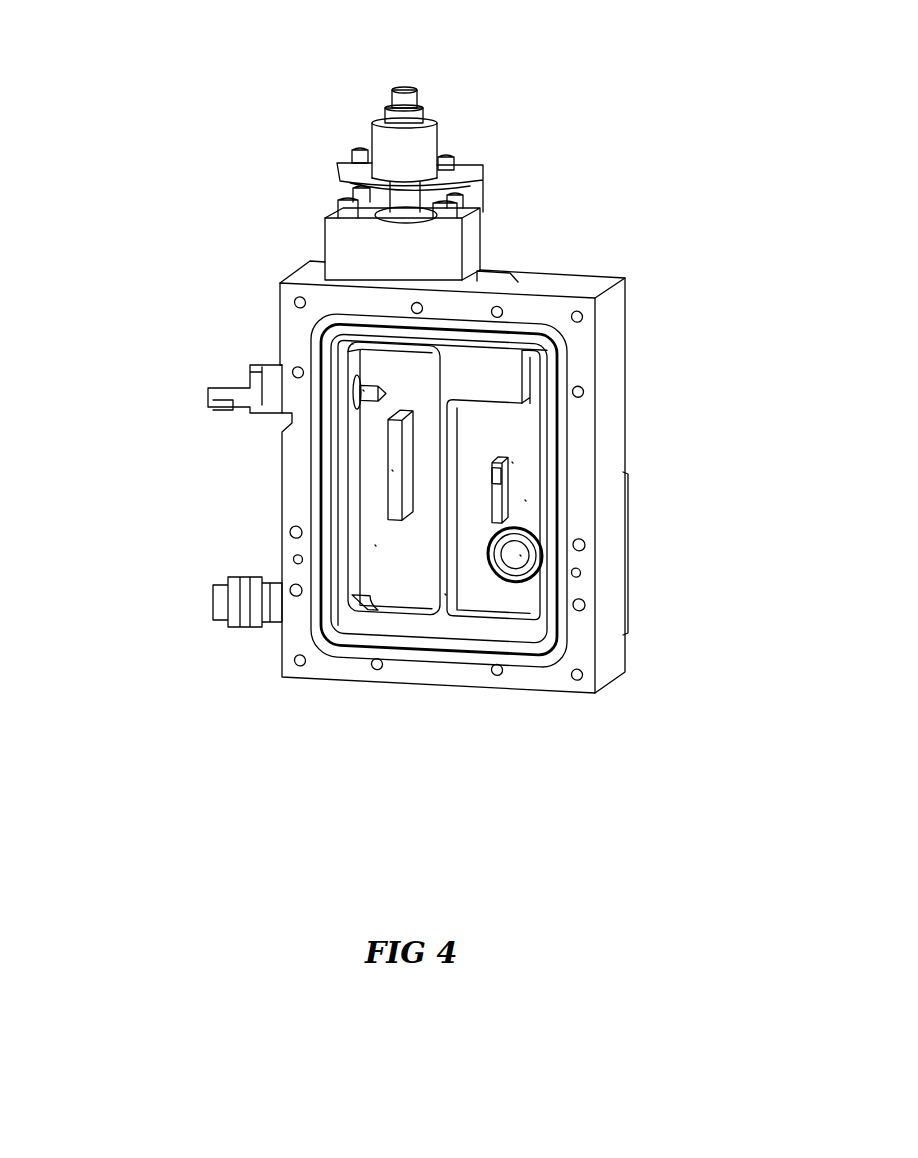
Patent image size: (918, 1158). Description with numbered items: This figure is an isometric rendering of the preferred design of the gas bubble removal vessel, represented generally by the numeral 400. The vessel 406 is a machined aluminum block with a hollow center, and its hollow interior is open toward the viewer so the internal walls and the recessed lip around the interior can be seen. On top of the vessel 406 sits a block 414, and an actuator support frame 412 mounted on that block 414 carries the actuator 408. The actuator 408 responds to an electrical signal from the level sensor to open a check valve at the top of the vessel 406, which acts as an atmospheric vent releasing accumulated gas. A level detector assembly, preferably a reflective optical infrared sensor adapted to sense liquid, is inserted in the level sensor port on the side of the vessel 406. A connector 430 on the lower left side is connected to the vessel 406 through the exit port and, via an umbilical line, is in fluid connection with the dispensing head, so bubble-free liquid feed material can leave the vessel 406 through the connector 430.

The gas bubble removal vessel 400 is at (172, 126).
The vessel 406 is at (523, 477).
The actuator 408 is at (372, 133).
The actuator support frame 412 is at (483, 183).
The block 414 is at (470, 243).
The connector 430 is at (232, 590).